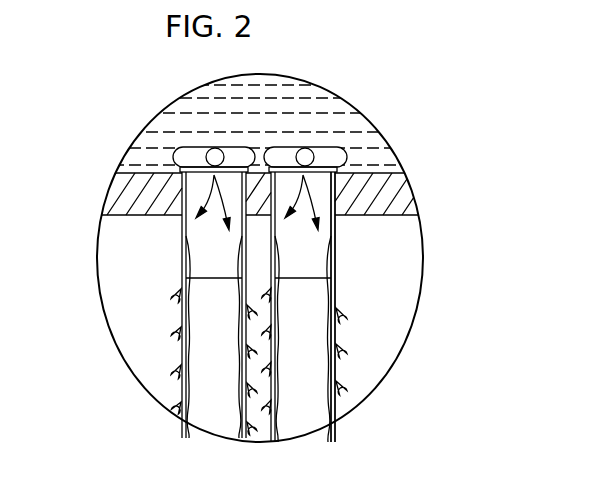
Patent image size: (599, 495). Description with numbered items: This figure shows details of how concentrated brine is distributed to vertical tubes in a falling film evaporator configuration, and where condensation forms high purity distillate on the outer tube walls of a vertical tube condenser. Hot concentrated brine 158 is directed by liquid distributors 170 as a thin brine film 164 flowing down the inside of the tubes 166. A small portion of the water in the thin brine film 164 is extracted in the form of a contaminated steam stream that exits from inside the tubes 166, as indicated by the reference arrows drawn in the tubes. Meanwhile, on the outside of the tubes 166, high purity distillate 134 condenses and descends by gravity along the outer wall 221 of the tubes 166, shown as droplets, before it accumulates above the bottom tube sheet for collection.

The hot concentrated brine 158 is at (282, 108).
The liquid distributors 170 is at (192, 156).
The high purity distillate 134 is at (186, 304).
The tubes 166 is at (340, 253).
The thin brine film 164 is at (330, 368).
The outer wall 221 is at (262, 353).